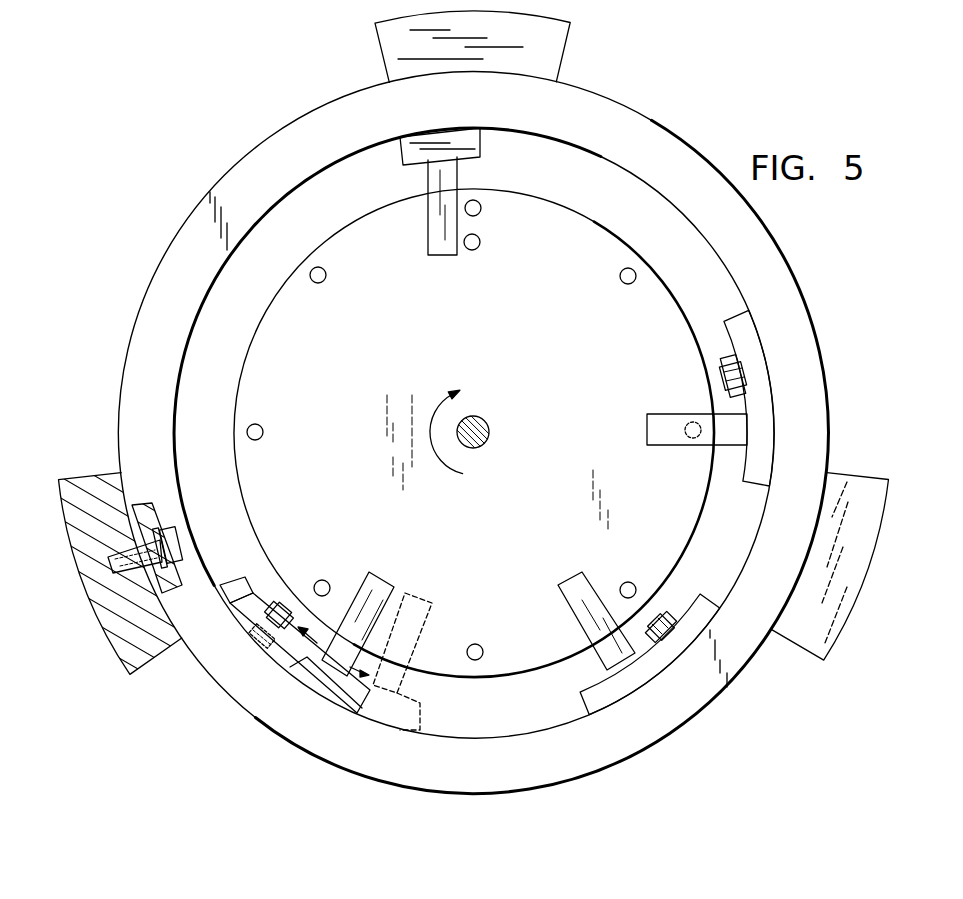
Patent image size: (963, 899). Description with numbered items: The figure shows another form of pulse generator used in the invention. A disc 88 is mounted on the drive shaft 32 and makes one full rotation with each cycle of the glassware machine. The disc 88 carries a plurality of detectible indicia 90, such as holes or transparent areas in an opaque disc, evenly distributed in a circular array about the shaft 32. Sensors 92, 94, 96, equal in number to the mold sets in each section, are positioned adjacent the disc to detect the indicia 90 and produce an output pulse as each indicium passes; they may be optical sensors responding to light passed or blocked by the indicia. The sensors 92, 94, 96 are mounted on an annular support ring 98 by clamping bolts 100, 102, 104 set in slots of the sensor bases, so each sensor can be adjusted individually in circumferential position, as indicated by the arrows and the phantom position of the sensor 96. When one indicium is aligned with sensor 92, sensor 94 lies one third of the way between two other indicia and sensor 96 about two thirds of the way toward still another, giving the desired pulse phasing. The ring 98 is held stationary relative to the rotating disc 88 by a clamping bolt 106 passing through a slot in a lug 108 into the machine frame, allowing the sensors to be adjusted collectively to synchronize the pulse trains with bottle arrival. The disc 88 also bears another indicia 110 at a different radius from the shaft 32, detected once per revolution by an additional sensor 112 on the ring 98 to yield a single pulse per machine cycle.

The drive shaft 32 is at (477, 413).
The disc 88 is at (388, 356).
The detectible indicia 90 is at (481, 211).
The sensor 92 is at (647, 420).
The sensor 94 is at (572, 572).
The sensor 96 is at (417, 593).
The annular support ring 98 is at (788, 288).
The clamping bolt 100 is at (723, 368).
The clamping bolt 102 is at (663, 612).
The clamping bolt 104 is at (270, 600).
The clamping bolt 106 is at (175, 537).
The lug 108 is at (150, 503).
The indicia 110 is at (477, 246).
The sensor 112 is at (428, 227).